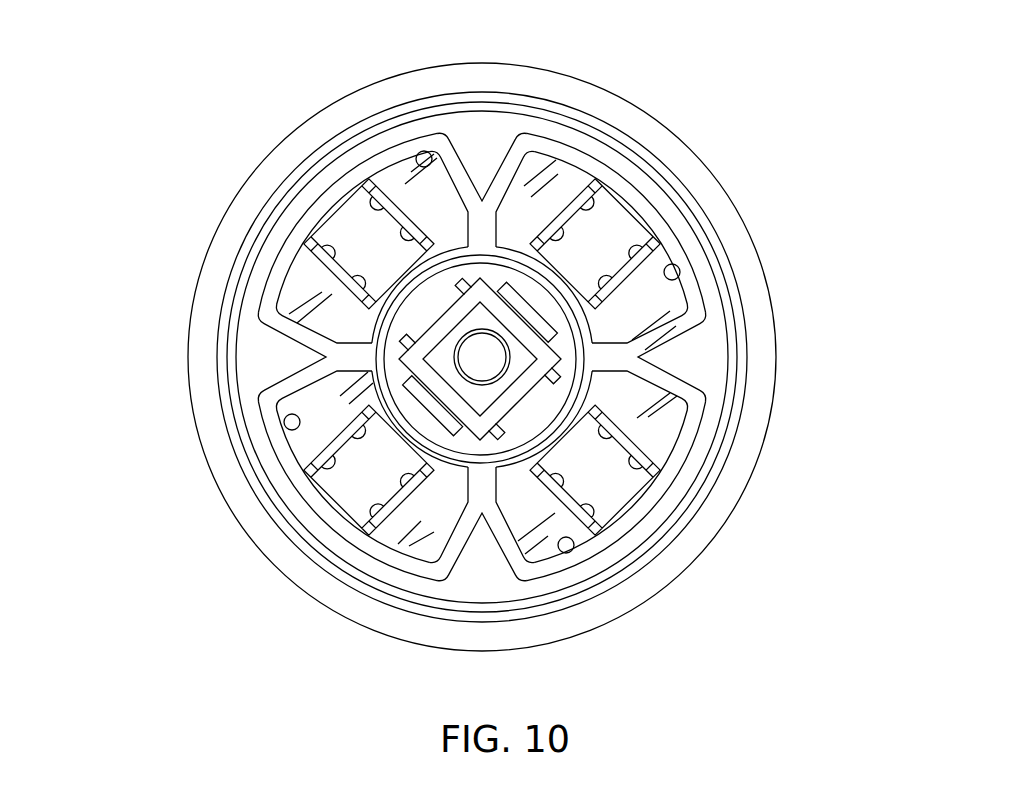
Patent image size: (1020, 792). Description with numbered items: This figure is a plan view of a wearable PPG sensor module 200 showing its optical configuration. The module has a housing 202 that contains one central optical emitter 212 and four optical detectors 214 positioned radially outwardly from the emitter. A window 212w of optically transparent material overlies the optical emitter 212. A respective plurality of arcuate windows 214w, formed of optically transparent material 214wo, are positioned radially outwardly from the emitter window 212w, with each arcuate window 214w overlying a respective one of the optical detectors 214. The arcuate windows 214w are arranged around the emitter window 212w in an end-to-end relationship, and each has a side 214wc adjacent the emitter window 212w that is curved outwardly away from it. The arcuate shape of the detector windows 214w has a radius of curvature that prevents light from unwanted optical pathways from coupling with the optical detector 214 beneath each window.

The wearable PPG sensor module 200 is at (757, 106).
The housing 202 is at (757, 247).
The optical emitter 212 is at (486, 357).
The window 212w is at (598, 483).
The optical detectors 214 is at (343, 237).
The arcuate windows 214w is at (427, 153).
The side 214wc is at (523, 206).
The optically transparent material 214wo is at (288, 306).